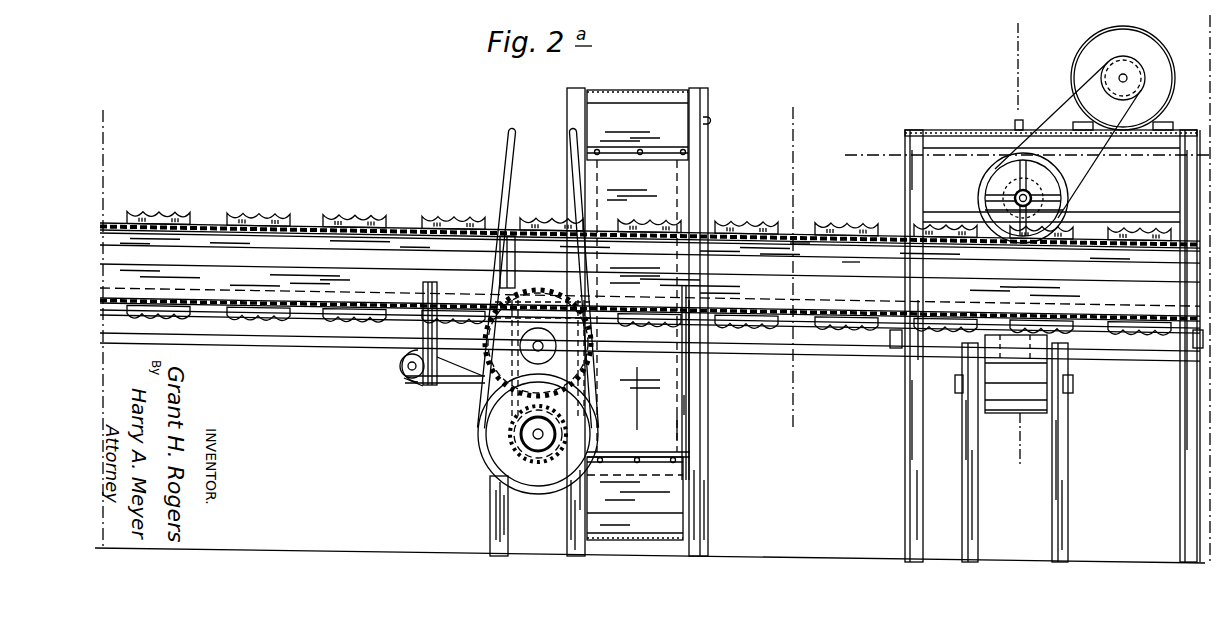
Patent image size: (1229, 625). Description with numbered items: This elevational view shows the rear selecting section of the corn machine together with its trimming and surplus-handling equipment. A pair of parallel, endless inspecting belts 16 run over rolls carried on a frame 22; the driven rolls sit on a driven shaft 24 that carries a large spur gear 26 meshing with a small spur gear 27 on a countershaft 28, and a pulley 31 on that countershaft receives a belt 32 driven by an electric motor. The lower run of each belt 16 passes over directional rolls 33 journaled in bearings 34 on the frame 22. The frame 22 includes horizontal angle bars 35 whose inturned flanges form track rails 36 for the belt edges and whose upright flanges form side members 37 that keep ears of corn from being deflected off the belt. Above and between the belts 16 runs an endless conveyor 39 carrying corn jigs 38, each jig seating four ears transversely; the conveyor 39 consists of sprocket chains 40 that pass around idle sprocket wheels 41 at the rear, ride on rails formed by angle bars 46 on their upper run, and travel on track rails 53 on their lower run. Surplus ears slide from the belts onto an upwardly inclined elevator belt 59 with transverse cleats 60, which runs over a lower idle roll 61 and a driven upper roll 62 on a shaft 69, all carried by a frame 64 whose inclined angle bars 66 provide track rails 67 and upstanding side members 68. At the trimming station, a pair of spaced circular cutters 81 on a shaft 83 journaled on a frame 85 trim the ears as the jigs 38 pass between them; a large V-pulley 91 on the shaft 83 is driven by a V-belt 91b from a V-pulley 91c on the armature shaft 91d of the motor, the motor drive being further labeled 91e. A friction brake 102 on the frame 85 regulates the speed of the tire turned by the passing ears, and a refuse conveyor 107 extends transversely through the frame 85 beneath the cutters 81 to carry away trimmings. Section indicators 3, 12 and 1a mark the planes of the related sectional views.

The corn jig 38 is at (247, 220).
The conveyor 39 is at (302, 223).
The sprocket chains 40 is at (401, 229).
The side members 37 is at (262, 278).
The track rails 36 is at (222, 296).
The angle bars 35 is at (159, 270).
The track rails 53 is at (207, 314).
The inspecting belts 16 is at (291, 327).
The frame 64 is at (727, 548).
The driven upper roll 62 is at (703, 101).
The transverse cleats 60 is at (654, 153).
The lower idle roll 61 is at (695, 524).
The shaft 69 is at (712, 120).
The side members 68 is at (692, 352).
The inclined angle bars 66 is at (694, 380).
The track rails 67 is at (684, 405).
The elevator belt 59 is at (673, 426).
The large spur gear 26 is at (553, 288).
The driven shaft 24 is at (542, 346).
The pulley 31 is at (500, 460).
The small spur gear 27 is at (574, 423).
The countershaft 28 is at (536, 433).
The belt 32 is at (480, 420).
The frame 22 is at (460, 381).
The directional rolls 33 is at (398, 370).
The bearings 34 is at (413, 381).
The idle sprocket wheels 41 is at (790, 243).
The angle bars 46 is at (842, 262).
The section line 3 is at (823, 153).
The section line 12 is at (993, 53).
The section line 1a is at (887, 135).
The refuse conveyor 107 is at (1076, 400).
The large V-pulley 91 is at (1050, 203).
The shaft 83 is at (1018, 196).
The frame 85 is at (937, 221).
The circular cutters 81 is at (1063, 211).
The armature shaft 91d is at (1125, 77).
The V-pulley 91c is at (1113, 68).
The motor pulley rim 91e is at (1158, 95).
The V-belt 91b is at (1058, 107).
The friction brake 102 is at (1016, 122).